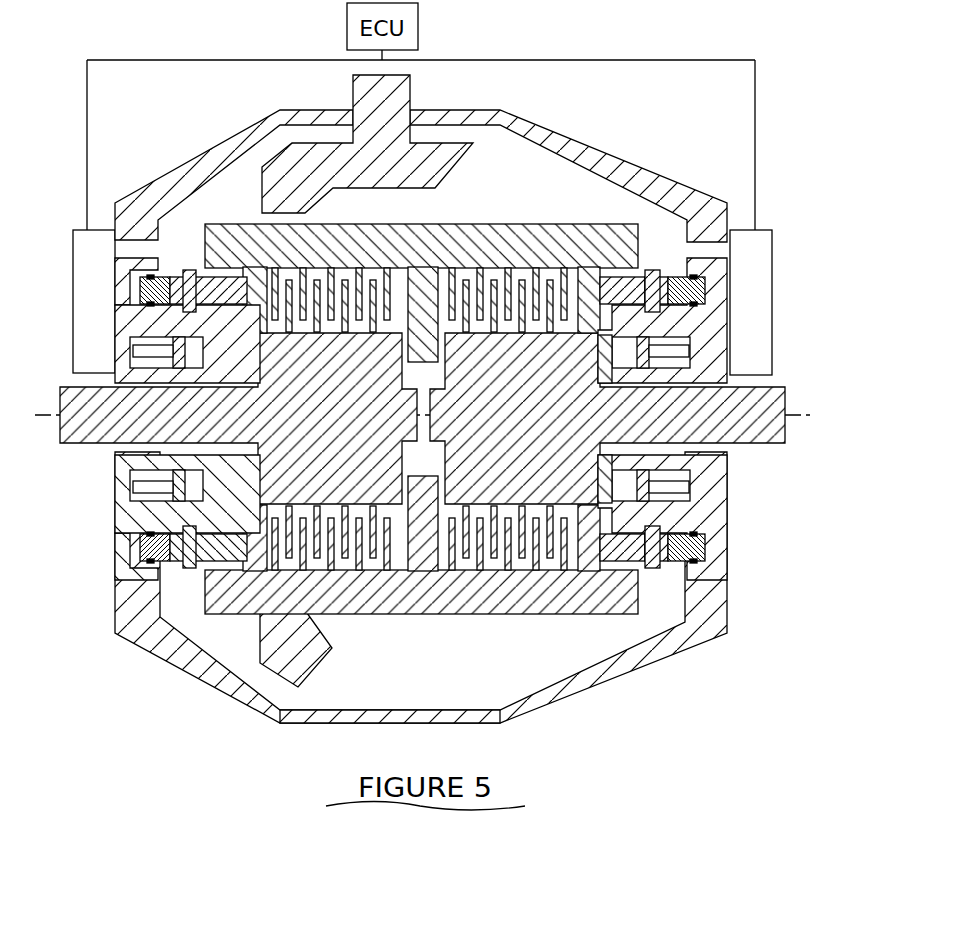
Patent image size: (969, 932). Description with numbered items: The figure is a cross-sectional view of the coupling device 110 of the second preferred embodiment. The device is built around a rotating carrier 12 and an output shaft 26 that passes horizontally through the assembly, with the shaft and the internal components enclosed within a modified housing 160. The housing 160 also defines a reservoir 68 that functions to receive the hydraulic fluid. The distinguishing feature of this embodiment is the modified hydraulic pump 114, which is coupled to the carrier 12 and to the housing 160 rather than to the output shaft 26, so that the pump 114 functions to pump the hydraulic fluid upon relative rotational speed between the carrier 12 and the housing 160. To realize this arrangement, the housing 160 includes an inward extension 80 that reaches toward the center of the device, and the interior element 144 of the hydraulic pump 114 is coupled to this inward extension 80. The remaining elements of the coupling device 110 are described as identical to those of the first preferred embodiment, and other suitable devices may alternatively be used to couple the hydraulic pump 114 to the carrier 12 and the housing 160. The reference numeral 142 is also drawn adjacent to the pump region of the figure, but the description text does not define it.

The carrier 12 is at (275, 188).
The output shaft 26 is at (782, 436).
The reservoir 68 is at (508, 670).
The inward extension 80 is at (626, 380).
The coupling device 110 is at (610, 134).
The hydraulic pump 114 is at (626, 473).
The clutch actuator 142 is at (622, 330).
The interior element 144 is at (672, 362).
The housing 160 is at (680, 638).